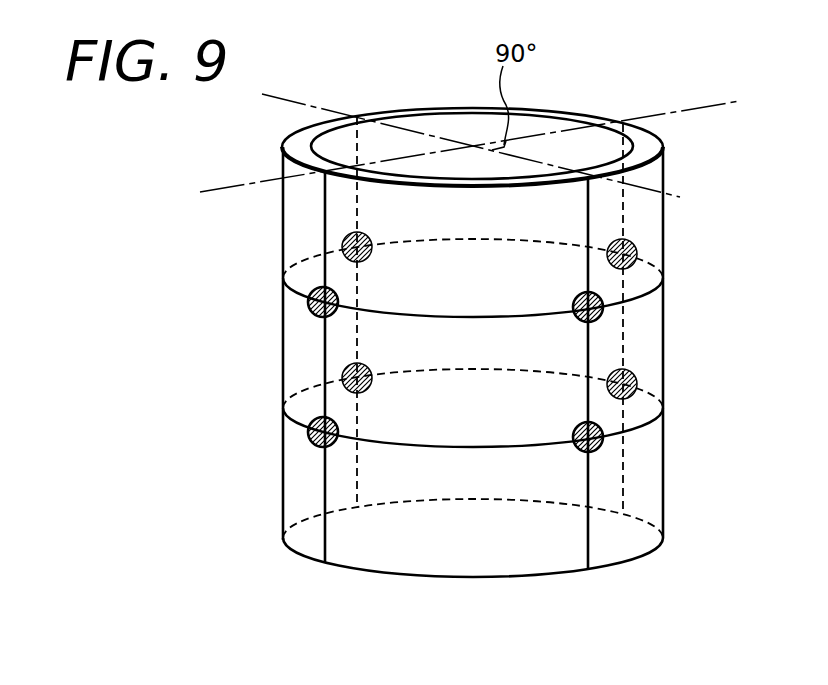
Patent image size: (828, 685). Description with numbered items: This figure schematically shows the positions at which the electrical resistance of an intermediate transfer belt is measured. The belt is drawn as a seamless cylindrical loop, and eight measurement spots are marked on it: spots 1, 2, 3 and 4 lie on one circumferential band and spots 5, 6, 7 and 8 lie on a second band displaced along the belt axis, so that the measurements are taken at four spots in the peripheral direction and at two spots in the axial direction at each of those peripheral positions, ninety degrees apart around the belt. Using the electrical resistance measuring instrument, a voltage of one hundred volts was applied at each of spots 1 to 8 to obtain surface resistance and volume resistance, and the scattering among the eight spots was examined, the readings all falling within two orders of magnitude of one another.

The measurement spot 1 is at (319, 314).
The measurement spot 2 is at (581, 317).
The measurement spot 3 is at (627, 243).
The measurement spot 4 is at (363, 255).
The measurement spot 5 is at (320, 446).
The measurement spot 6 is at (581, 448).
The measurement spot 7 is at (627, 374).
The measurement spot 8 is at (363, 388).